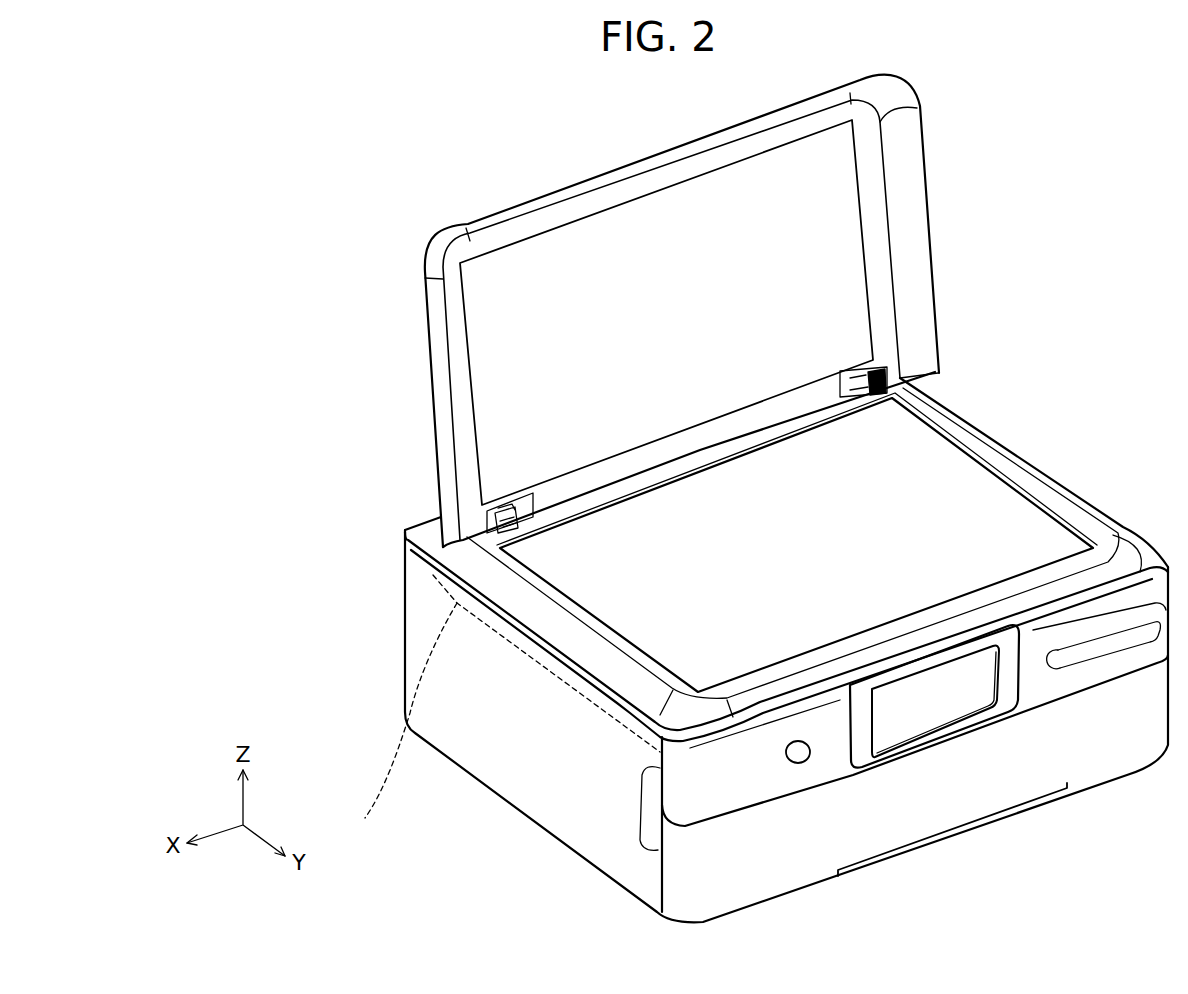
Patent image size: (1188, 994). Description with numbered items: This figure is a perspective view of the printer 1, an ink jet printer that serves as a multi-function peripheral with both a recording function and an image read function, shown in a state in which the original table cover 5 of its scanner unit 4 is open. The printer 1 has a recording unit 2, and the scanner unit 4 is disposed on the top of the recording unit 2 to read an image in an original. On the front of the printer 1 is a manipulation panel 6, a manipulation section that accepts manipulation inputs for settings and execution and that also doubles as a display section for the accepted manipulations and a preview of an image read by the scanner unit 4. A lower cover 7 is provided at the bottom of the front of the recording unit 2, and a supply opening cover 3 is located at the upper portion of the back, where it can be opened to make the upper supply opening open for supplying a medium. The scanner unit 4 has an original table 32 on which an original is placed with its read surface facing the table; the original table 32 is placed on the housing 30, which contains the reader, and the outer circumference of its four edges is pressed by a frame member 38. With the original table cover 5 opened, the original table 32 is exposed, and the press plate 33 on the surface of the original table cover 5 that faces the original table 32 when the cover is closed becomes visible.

The printer 1 is at (318, 345).
The recording unit 2 is at (507, 727).
The supply opening cover 3 is at (432, 505).
The scanner unit 4 is at (1062, 463).
The original table cover 5 is at (927, 187).
The manipulation panel 6 is at (863, 757).
The lower cover 7 is at (1100, 752).
The housing 30 is at (505, 711).
The original table 32 is at (963, 480).
The press plate 33 is at (728, 190).
The frame member 38 is at (630, 665).